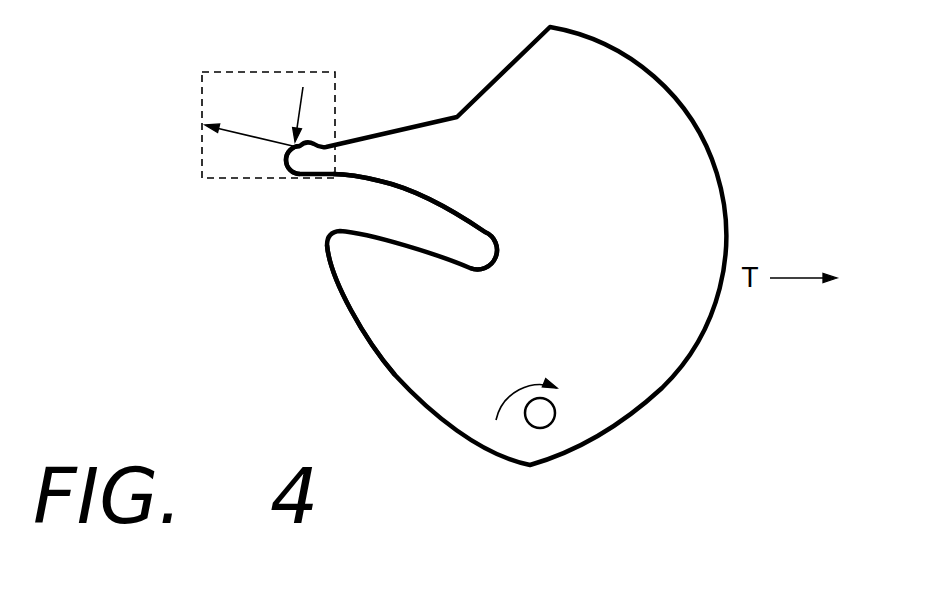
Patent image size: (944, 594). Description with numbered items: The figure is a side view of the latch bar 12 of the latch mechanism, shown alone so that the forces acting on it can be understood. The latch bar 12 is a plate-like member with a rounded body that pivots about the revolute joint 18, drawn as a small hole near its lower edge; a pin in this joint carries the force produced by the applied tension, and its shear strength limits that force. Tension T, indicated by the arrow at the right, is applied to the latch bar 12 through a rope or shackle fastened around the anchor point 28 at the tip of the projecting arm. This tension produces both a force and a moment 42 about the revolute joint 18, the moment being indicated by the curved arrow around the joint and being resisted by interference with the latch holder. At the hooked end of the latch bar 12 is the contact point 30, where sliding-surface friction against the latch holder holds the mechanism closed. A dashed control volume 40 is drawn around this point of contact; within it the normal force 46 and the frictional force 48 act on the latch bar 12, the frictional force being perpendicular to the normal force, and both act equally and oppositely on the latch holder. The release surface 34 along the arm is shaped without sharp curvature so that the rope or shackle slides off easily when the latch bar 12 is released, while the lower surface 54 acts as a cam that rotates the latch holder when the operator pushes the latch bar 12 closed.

The latch bar 12 is at (662, 107).
The revolute joint 18 is at (553, 418).
The anchor point 28 is at (488, 253).
The contact point 30 is at (293, 148).
The release surface 34 is at (463, 213).
The control volume 40 is at (317, 90).
The moment 42 is at (497, 423).
The normal force 46 is at (282, 112).
The frictional force 48 is at (251, 144).
The surface 54 is at (365, 333).